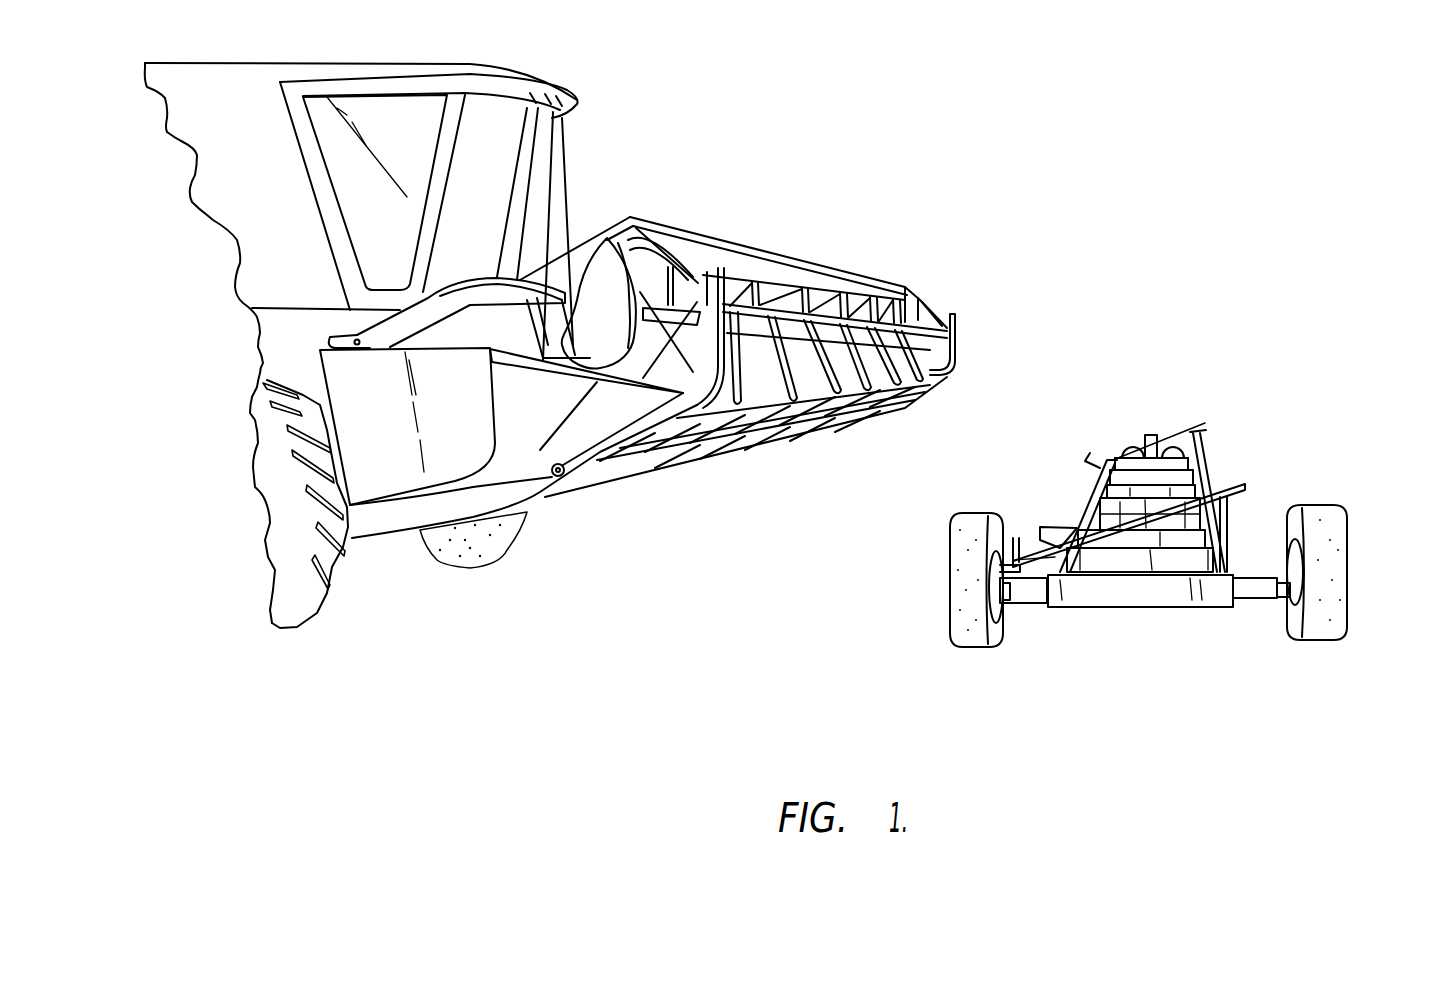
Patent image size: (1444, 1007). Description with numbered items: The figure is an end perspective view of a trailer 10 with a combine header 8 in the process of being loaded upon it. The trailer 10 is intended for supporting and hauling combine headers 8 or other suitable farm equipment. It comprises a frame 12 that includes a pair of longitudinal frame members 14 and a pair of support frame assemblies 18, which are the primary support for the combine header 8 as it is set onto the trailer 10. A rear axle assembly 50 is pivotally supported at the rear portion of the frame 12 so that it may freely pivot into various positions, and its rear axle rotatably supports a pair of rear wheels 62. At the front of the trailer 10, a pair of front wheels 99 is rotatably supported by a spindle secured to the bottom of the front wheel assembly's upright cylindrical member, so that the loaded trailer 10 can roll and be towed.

The combine header 8 is at (802, 254).
The trailer 10 is at (1051, 468).
The frame 12 is at (1222, 481).
The longitudinal frame members 14 is at (1203, 470).
The support frame assemblies 18 is at (1178, 433).
The rear axle assembly 50 is at (1017, 622).
The rear wheels 62 is at (966, 553).
The front wheels 99 is at (1123, 447).